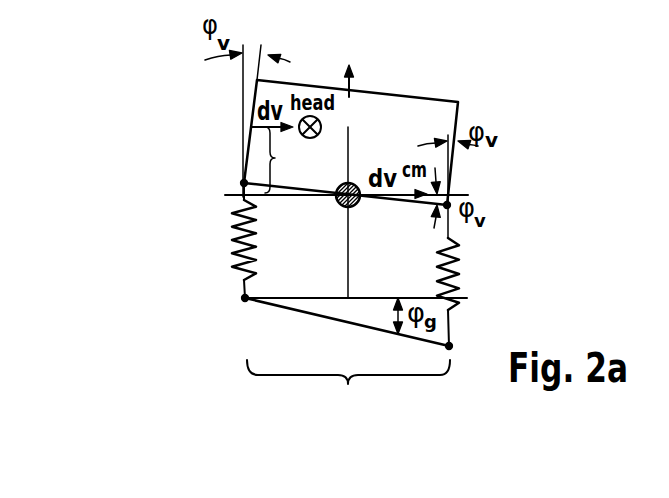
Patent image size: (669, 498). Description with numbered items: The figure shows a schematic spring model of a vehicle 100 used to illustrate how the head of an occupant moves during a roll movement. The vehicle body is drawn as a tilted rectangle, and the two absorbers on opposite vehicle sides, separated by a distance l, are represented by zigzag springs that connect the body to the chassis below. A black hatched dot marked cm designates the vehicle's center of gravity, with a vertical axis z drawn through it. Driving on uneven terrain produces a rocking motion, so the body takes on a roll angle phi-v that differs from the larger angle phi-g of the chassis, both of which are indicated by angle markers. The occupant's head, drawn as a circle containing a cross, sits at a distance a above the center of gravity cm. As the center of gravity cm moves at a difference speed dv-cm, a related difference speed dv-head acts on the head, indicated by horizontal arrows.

The vehicle 100 is at (410, 95).
The center of gravity cm is at (362, 182).
The distance a is at (278, 160).
The distance l is at (348, 391).
The vertical axis z is at (359, 77).